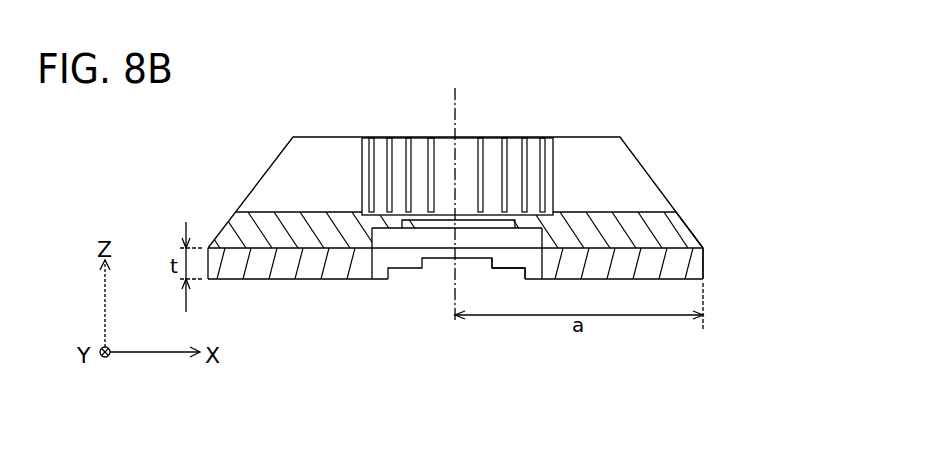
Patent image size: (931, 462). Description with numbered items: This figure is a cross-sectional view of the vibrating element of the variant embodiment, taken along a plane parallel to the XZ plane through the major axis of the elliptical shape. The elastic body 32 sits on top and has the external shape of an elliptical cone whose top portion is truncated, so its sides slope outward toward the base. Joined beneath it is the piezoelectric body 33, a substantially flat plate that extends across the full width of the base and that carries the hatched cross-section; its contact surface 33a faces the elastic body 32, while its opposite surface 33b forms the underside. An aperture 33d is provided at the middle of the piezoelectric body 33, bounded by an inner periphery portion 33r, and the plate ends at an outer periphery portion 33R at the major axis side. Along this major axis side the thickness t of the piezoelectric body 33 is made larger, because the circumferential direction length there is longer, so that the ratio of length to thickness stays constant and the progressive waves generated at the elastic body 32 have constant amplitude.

The elastic body 32 is at (240, 168).
The piezoelectric body 33 is at (492, 272).
The plate portion 33a is at (256, 250).
The bottom surface 33b is at (327, 280).
The recess 33d is at (407, 263).
The step portion 33r is at (514, 264).
The right end portion 33R is at (703, 258).